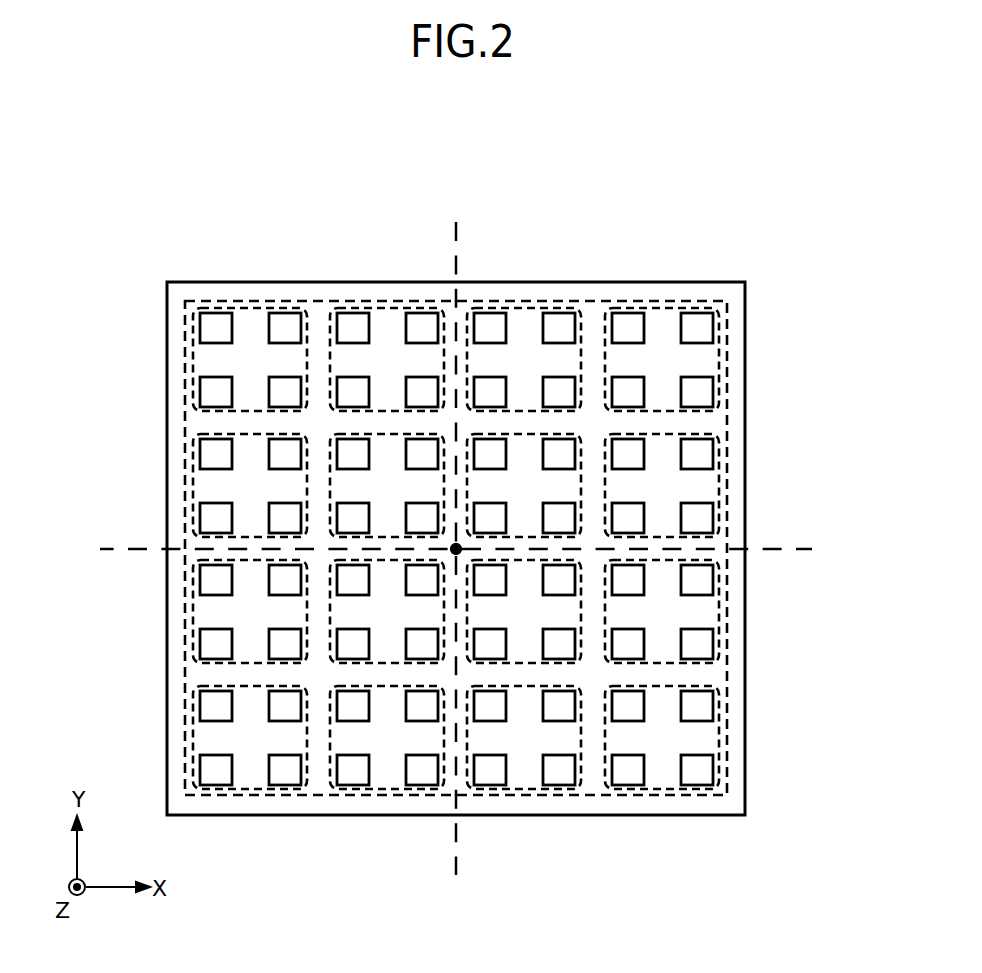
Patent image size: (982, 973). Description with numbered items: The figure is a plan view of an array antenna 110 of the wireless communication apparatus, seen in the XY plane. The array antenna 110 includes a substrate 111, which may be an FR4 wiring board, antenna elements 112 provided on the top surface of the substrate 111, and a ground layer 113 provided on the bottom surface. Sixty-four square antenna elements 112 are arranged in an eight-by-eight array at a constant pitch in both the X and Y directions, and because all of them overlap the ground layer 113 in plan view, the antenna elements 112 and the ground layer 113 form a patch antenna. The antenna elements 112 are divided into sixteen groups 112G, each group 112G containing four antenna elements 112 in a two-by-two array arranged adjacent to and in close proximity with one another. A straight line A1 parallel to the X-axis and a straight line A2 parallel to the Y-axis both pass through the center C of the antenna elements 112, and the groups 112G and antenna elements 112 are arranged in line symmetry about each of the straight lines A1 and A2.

The array antenna 110 is at (772, 193).
The substrate 111 is at (738, 425).
The antenna element 112 is at (628, 309).
The group 112G is at (190, 361).
The ground layer 113 is at (594, 300).
The center C is at (456, 549).
The straight line A1 is at (437, 550).
The straight line A2 is at (457, 534).